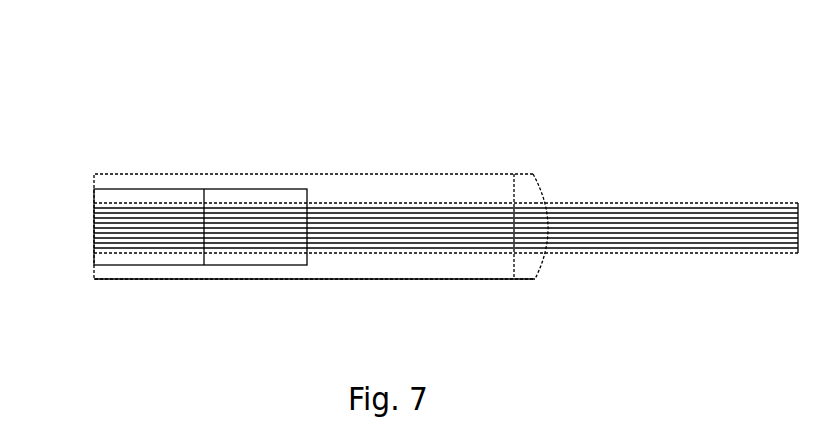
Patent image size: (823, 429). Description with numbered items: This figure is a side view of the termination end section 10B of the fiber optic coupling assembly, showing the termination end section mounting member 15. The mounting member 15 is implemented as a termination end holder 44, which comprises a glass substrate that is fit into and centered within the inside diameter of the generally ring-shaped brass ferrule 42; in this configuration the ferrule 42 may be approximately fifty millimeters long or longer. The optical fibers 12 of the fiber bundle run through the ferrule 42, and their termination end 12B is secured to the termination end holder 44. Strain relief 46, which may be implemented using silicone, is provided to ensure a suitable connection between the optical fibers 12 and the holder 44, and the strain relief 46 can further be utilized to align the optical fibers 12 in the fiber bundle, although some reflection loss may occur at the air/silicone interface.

The termination end section 10B is at (582, 87).
The optical fibers 12 is at (722, 198).
The termination end 12B is at (88, 234).
The termination end section mounting member 15 is at (245, 115).
The brass ferrule 42 is at (445, 174).
The termination end holder 44 is at (110, 188).
The strain relief 46 is at (525, 174).